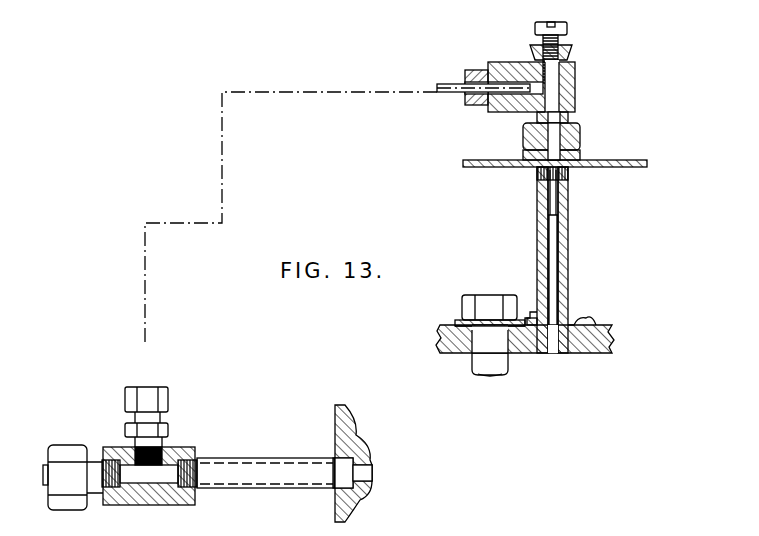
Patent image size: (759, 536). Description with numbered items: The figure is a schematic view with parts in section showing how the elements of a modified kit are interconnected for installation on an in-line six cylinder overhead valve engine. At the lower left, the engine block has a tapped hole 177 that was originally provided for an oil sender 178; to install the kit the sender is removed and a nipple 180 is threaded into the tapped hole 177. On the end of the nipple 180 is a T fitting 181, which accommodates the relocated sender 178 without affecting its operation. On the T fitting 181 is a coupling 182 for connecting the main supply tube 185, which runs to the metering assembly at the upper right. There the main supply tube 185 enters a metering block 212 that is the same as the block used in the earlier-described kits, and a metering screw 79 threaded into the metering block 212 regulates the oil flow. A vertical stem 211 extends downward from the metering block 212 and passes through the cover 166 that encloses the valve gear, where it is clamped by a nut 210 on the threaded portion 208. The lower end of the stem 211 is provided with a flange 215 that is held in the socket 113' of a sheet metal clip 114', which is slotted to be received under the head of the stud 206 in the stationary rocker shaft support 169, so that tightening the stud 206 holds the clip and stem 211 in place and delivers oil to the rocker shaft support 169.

The metering screw 79 is at (562, 25).
The metering block 212 is at (513, 62).
The main supply tube 185 is at (455, 82).
The nut 210 is at (582, 137).
The cover 166 is at (625, 161).
The threaded portion 208 is at (586, 168).
The stem 211 is at (569, 212).
The stud 206 is at (484, 295).
The socket 113' is at (518, 300).
The sheet metal clip 114' is at (472, 314).
The flange 215 is at (577, 316).
The stationary rocker shaft support 169 is at (441, 353).
The oil sender 178 is at (82, 424).
The coupling 182 is at (170, 400).
The T fitting 181 is at (152, 506).
The nipple 180 is at (290, 458).
The tapped hole 177 is at (338, 452).